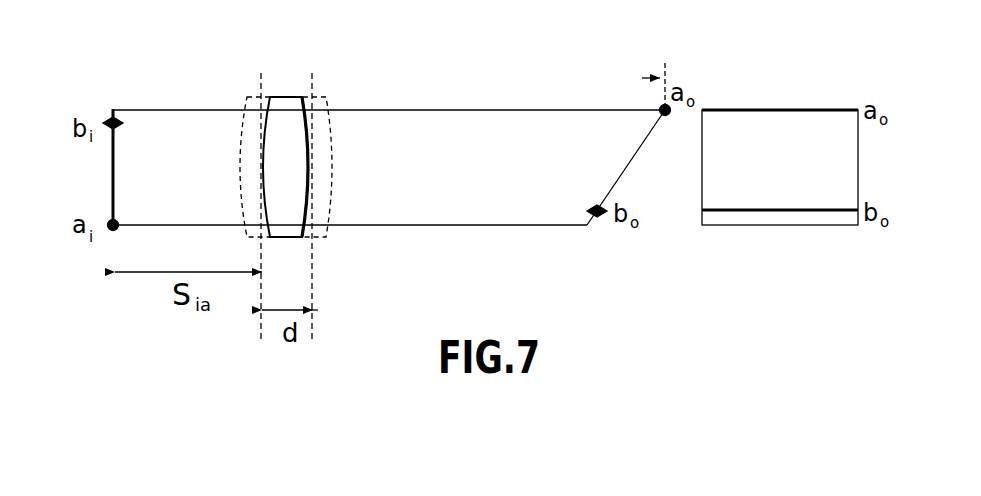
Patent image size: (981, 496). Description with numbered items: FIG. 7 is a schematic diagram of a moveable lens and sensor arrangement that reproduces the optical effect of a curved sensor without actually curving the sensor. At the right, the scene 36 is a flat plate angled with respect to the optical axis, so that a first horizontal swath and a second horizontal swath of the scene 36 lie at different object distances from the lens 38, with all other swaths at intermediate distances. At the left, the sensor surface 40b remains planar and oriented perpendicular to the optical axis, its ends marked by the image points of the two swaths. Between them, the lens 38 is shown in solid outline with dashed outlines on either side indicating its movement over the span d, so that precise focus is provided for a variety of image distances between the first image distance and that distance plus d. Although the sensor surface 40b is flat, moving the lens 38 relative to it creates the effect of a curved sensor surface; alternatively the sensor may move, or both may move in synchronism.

The scene 36 is at (628, 162).
The lens 38 is at (273, 71).
The sensor surface 40b is at (117, 138).